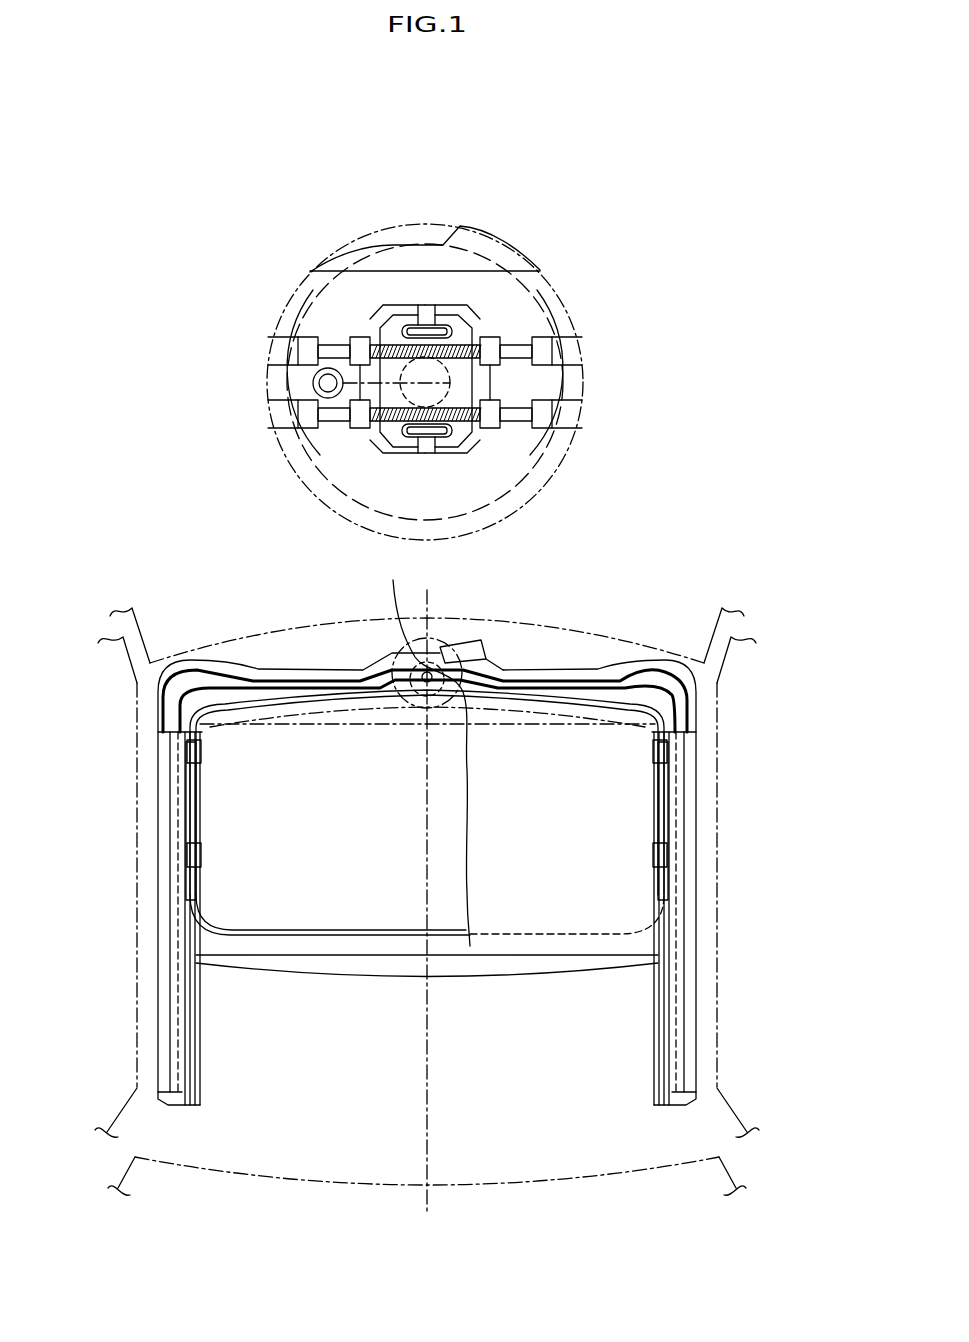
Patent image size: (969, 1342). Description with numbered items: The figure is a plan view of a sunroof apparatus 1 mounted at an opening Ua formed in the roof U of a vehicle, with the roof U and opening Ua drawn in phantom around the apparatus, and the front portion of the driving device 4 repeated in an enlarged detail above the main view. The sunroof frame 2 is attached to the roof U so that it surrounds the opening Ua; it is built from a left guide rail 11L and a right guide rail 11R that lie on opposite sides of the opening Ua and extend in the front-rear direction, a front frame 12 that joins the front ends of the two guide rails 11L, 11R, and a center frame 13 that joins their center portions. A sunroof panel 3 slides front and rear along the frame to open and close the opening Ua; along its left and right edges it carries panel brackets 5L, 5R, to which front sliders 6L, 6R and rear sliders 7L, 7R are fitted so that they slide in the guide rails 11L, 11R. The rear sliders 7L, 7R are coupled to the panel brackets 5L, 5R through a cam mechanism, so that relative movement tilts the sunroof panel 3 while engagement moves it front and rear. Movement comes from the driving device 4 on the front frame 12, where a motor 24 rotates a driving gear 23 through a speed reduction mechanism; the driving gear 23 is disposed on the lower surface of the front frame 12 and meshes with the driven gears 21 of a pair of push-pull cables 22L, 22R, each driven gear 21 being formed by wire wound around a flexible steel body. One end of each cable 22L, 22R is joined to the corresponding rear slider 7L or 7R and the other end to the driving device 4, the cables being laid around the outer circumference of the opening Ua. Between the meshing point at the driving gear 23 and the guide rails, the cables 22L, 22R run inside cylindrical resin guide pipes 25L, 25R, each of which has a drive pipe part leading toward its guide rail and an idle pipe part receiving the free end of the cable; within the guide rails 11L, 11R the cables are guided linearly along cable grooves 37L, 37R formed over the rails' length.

The sunroof apparatus 1 is at (256, 631).
The sunroof frame 2 is at (157, 791).
The sunroof panel 3 is at (270, 913).
The driving device 4 is at (433, 216).
The panel bracket 5L is at (198, 814).
The panel bracket 5R is at (656, 814).
The front slider 6L is at (203, 753).
The front slider 6R is at (651, 753).
The rear slider 7L is at (203, 854).
The rear slider 7R is at (651, 854).
The guide rail 11L is at (163, 998).
The guide rail 11R is at (691, 998).
The front frame 12 is at (352, 659).
The center frame 13 is at (393, 964).
The driven gear 21 is at (450, 383).
The cable 22L is at (464, 313).
The cable 22R is at (481, 442).
The driving gear 23 is at (313, 383).
The motor 24 is at (472, 241).
The guide pipe 25L is at (333, 347).
The guide pipe 25R is at (333, 420).
The cable groove 37L is at (178, 935).
The cable groove 37R is at (676, 935).
The roof U is at (653, 639).
The opening Ua is at (546, 933).